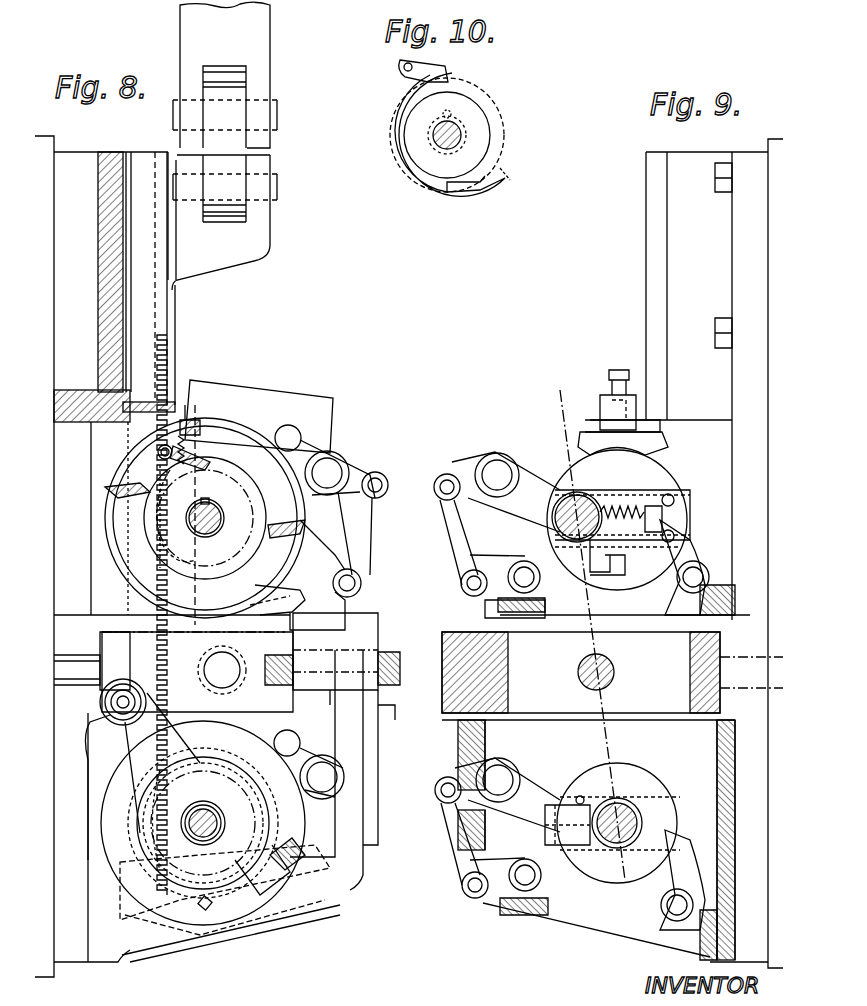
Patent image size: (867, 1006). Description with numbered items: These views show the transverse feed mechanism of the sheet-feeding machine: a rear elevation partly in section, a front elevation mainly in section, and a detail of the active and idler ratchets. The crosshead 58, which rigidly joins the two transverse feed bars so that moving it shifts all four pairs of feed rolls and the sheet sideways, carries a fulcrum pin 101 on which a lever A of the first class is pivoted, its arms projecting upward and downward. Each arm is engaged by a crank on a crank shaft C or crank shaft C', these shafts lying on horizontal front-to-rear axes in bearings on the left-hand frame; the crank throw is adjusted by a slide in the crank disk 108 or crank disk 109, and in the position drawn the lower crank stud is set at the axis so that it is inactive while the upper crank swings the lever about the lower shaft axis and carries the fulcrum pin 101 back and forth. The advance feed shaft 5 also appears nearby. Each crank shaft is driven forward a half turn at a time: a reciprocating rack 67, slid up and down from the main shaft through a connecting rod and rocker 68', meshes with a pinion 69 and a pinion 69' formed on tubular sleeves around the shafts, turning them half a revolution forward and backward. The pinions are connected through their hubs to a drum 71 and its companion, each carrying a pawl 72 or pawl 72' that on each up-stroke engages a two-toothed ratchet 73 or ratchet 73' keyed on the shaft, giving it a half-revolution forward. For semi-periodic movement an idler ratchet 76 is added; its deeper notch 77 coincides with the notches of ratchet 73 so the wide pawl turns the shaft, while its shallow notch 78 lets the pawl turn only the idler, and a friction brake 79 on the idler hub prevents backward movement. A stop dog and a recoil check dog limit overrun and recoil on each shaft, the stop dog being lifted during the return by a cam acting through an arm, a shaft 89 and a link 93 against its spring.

In FIG. 8, the feed shaft 5 is at (388, 640).
In FIG. 8, the crosshead 58 is at (240, 662).
In FIG. 9, the crosshead 58 is at (581, 672).
In FIG. 8, the reciprocating rack 67 is at (167, 362).
In FIG. 8, the rocker 68' is at (222, 146).
In FIG. 8, the pinion 69 is at (183, 516).
In FIG. 8, the pinion 69' is at (189, 820).
In FIG. 8, the drum 71 is at (205, 430).
In FIG. 8, the pawl 72 is at (197, 453).
In FIG. 10, the pawl 72 is at (439, 63).
In FIG. 8, the pawl 72' is at (158, 769).
In FIG. 8, the two-toothed ratchet 73 is at (216, 519).
In FIG. 10, the two-toothed ratchet 73 is at (499, 185).
In FIG. 8, the two-toothed ratchet 73' is at (193, 935).
In FIG. 10, the idler ratchet 76 is at (480, 100).
In FIG. 10, the deeper notch 77 is at (458, 188).
In FIG. 10, the shallow notch 78 is at (440, 82).
In FIG. 8, the friction brake 79 is at (235, 905).
In FIG. 9, the shaft 89 is at (505, 780).
In FIG. 8, the link 93 is at (345, 540).
In FIG. 8, the fulcrum pin 101 is at (238, 684).
In FIG. 9, the fulcrum pin 101 is at (612, 672).
In FIG. 9, the crank disk 108 is at (612, 494).
In FIG. 9, the crank disk 109 is at (617, 666).
In FIG. 8, the lever A is at (322, 397).
In FIG. 8, the crank shaft C is at (205, 518).
In FIG. 8, the crank shaft C' is at (203, 823).